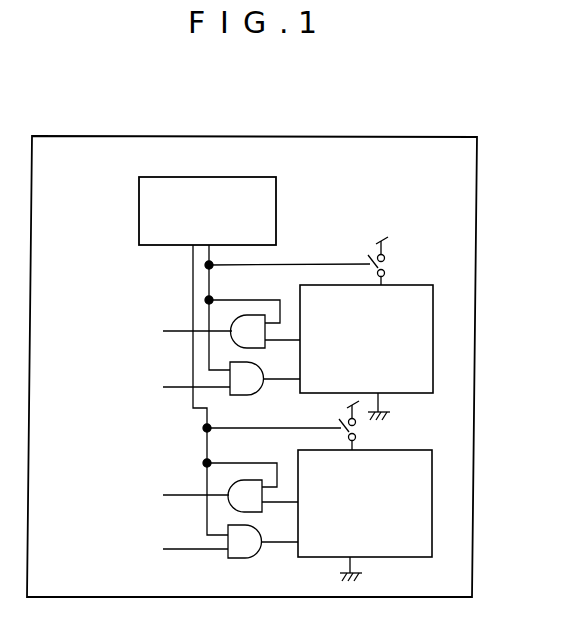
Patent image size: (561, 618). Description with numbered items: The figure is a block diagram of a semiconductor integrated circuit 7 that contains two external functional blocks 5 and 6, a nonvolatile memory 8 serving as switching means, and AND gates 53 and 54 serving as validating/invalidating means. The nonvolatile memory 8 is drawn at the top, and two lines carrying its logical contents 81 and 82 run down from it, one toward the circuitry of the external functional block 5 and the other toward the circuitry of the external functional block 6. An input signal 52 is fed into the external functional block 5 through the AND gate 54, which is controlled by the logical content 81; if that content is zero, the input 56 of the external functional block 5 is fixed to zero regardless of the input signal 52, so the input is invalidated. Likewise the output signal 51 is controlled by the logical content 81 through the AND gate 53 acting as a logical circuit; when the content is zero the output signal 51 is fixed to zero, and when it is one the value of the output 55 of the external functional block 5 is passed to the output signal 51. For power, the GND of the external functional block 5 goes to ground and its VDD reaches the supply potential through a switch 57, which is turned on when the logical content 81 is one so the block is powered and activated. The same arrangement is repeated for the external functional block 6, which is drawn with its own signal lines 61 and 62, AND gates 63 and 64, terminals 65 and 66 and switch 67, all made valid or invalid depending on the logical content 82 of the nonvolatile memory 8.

The semiconductor integrated circuit 7 is at (367, 137).
The nonvolatile memory 8 is at (180, 200).
The logical content 81 is at (217, 297).
The logical content 82 is at (196, 390).
The external functional block 5 is at (423, 302).
The external functional block 6 is at (420, 463).
The output signal 51 is at (185, 338).
The input signal 52 is at (184, 392).
The AND gate 53 is at (244, 324).
The AND gate 54 is at (247, 378).
The output 55 is at (299, 340).
The input 56 is at (298, 379).
The switch 57 is at (311, 261).
The first input signal line 61 is at (182, 500).
The second input signal line 62 is at (182, 555).
The first gate circuit 63 is at (242, 487).
The second gate circuit 64 is at (245, 541).
The first input terminal of external IP 65 is at (297, 502).
The second input terminal of external IP 66 is at (297, 543).
The power switch 67 is at (294, 425).